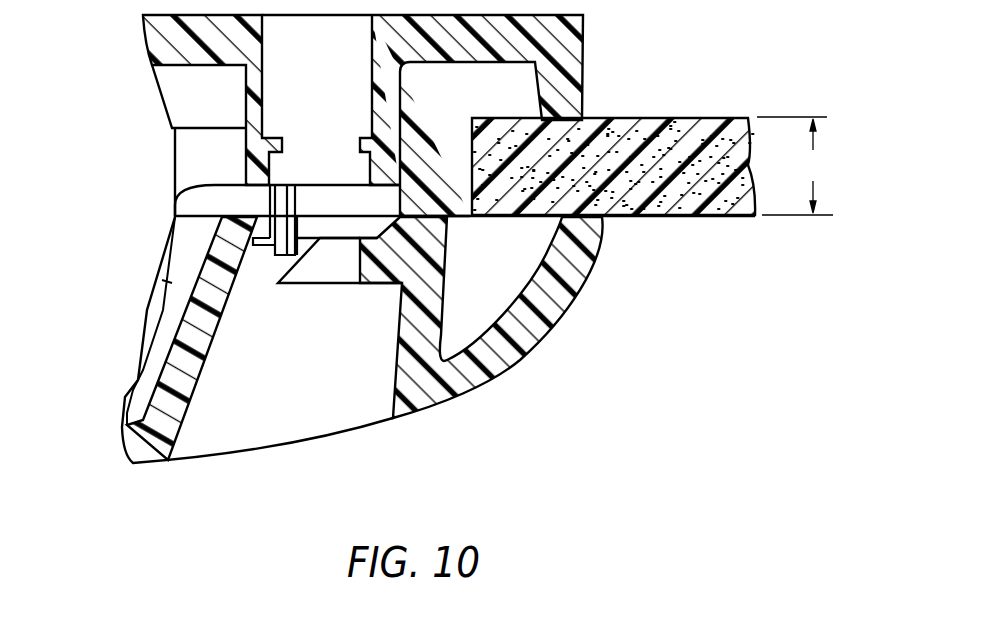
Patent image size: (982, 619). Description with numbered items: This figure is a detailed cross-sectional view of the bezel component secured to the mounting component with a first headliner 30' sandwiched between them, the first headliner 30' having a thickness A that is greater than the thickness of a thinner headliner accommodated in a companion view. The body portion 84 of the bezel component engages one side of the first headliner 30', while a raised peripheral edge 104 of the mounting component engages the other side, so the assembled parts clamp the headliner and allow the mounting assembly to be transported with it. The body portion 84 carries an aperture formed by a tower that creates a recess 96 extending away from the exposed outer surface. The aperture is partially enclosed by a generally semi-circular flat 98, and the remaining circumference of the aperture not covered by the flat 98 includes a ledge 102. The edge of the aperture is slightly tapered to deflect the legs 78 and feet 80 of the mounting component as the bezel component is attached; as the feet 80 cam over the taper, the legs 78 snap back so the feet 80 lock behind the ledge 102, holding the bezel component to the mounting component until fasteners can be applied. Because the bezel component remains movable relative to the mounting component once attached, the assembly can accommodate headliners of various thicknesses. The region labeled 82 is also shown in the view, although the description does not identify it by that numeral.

The leg 78 is at (292, 216).
The foot 80 is at (263, 258).
The outer shell lip 82 is at (132, 390).
The body portion 84 is at (543, 342).
The recess 96 is at (183, 428).
The flat 98 is at (330, 270).
The ledge 102 is at (258, 243).
The raised peripheral edge 104 is at (562, 130).
The first headliner 30' is at (619, 123).
The thickness A is at (795, 166).